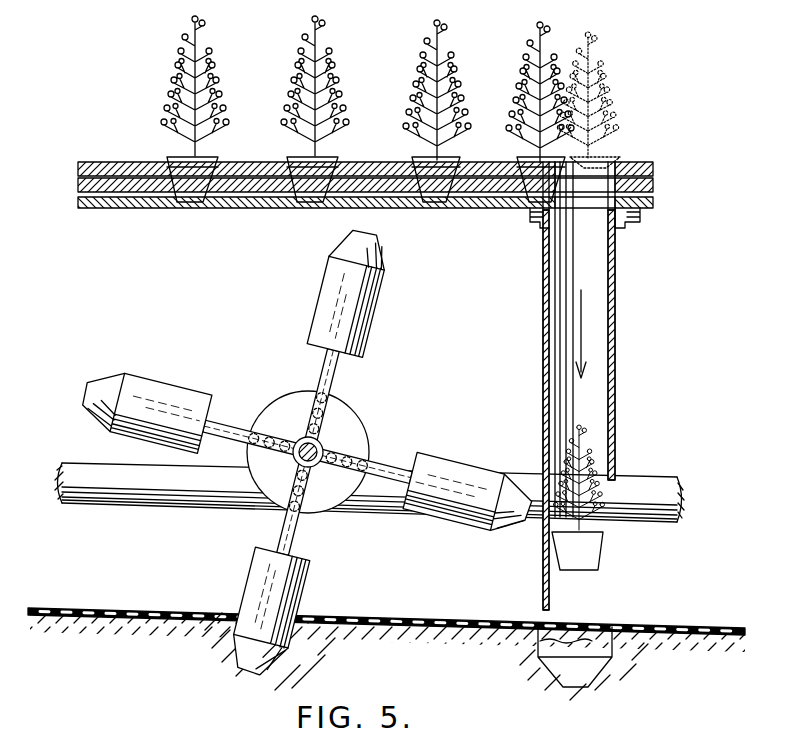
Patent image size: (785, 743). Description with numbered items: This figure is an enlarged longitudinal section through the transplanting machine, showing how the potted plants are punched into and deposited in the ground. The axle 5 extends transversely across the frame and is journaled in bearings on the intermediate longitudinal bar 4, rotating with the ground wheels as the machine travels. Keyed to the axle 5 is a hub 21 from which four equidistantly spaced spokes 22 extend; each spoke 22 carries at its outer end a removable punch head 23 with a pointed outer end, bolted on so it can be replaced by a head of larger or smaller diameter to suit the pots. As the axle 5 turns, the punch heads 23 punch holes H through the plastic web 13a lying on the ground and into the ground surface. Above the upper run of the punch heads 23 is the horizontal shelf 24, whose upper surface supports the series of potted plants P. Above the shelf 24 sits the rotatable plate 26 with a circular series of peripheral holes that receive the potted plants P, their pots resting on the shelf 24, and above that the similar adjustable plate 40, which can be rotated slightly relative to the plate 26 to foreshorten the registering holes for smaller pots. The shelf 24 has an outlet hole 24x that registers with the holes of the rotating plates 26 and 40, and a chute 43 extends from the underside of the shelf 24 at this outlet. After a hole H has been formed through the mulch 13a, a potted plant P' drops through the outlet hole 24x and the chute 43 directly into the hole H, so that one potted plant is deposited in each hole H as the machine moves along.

The longitudinal bar 4 is at (143, 500).
The axle 5 is at (323, 448).
The plastic web 13a is at (376, 617).
The hub 21 is at (340, 414).
The spoke 22 is at (330, 372).
The punch head 23 is at (330, 290).
The shelf 24 is at (262, 210).
The outlet hole 24x is at (597, 213).
The rotatable plate 26 is at (78, 184).
The adjustable plate 40 is at (127, 162).
The chute 43 is at (617, 325).
The hole H is at (548, 648).
The potted plant P is at (367, 109).
The potted plant P' is at (604, 301).